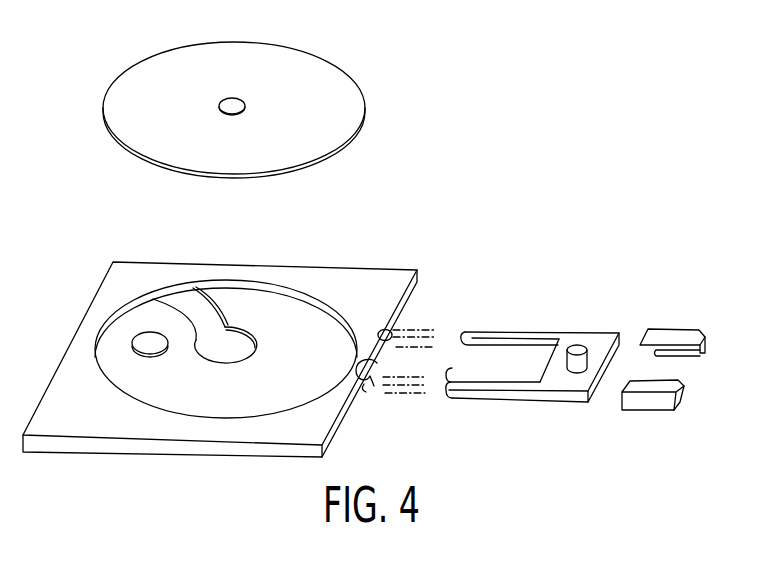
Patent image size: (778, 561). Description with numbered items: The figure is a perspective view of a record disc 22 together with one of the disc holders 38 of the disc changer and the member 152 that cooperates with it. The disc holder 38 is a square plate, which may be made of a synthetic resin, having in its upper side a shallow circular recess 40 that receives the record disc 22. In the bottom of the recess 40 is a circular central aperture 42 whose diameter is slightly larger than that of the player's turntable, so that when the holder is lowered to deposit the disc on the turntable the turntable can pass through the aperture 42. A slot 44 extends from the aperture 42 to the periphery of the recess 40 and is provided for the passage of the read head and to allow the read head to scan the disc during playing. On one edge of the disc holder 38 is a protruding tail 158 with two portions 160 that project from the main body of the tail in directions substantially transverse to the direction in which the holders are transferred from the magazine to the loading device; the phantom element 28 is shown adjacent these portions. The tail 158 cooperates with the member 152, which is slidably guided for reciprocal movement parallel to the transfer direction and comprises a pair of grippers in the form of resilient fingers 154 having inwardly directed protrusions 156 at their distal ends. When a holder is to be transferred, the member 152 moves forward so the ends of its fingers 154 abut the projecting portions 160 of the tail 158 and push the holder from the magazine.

The record disc 22 is at (355, 123).
The disc holder 38 is at (283, 437).
The circular recess 40 is at (323, 320).
The central aperture 42 is at (253, 345).
The slot 44 is at (219, 312).
The projecting portions 160 is at (393, 334).
The spring (phantom) 28 is at (433, 330).
The tail 158 is at (384, 358).
The member 152 is at (598, 333).
The resilient fingers 154 is at (532, 331).
The protrusions 156 is at (455, 366).